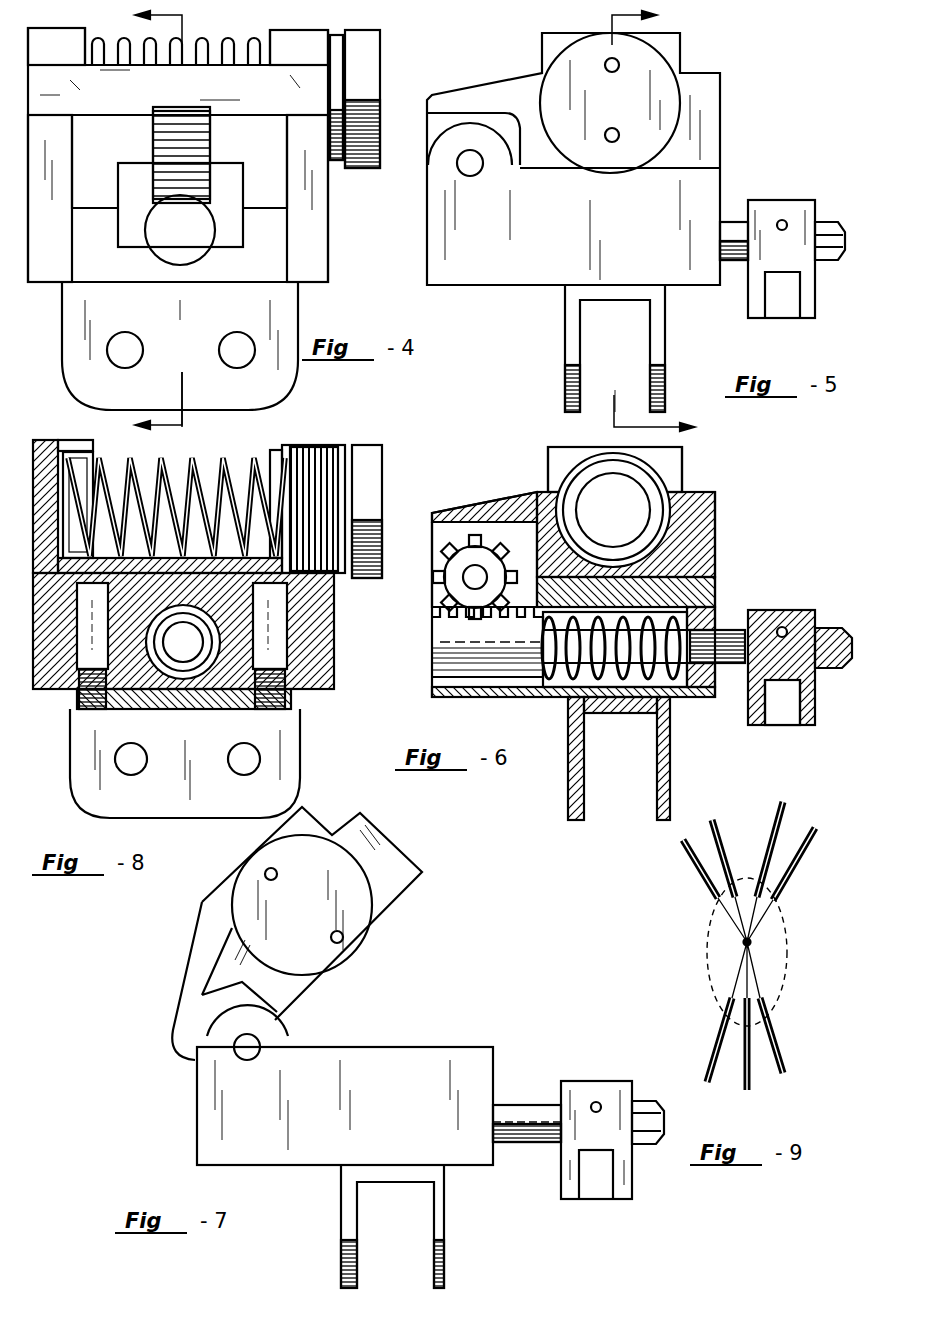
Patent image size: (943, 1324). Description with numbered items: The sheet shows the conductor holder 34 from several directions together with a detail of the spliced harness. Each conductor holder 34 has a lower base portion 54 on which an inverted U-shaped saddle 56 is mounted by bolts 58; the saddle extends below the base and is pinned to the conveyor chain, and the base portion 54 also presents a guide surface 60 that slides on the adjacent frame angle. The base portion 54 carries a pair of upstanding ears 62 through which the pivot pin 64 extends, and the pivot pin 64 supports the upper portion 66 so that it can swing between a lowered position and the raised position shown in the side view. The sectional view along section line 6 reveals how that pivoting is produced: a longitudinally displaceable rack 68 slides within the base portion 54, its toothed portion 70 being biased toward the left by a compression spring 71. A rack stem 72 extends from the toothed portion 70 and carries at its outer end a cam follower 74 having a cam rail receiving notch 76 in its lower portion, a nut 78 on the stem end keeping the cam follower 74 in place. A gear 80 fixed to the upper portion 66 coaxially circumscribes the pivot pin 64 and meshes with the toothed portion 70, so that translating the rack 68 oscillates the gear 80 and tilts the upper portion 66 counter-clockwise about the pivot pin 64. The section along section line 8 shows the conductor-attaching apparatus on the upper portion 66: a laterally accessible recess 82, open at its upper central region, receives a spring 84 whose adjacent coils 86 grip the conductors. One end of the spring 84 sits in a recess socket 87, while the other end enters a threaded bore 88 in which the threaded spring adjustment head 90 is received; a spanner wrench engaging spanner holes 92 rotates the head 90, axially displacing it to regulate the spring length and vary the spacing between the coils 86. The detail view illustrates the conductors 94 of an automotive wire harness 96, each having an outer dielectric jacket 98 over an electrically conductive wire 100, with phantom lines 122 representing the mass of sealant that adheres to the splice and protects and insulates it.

In FIG. 4, the section line 6- 6 is at (146, 221).
In FIG. 8, the section line 6- 6 is at (182, 427).
In FIG. 5, the section line 8- 8 is at (665, 223).
In FIG. 4, the conductor holder 34 is at (228, 221).
In FIG. 5, the conductor holder 34 is at (646, 223).
In FIG. 6, the conductor holder 34 is at (626, 633).
In FIG. 7, the conductor holder 34 is at (351, 1047).
In FIG. 4, the lower base portion 54 is at (322, 268).
In FIG. 5, the lower base portion 54 is at (616, 242).
In FIG. 8, the lower base portion 54 is at (336, 656).
In FIG. 6, the lower base portion 54 is at (718, 590).
In FIG. 7, the lower base portion 54 is at (412, 1119).
In FIG. 4, the inverted U-shaped saddle 56 is at (220, 323).
In FIG. 5, the inverted U-shaped saddle 56 is at (668, 325).
In FIG. 8, the inverted U-shaped saddle 56 is at (72, 766).
In FIG. 6, the inverted U-shaped saddle 56 is at (670, 803).
In FIG. 7, the inverted U-shaped saddle 56 is at (446, 1222).
In FIG. 8, the bolts 58 is at (290, 634).
In FIG. 5, the guide surface 60 is at (492, 286).
In FIG. 7, the guide surface 60 is at (190, 1162).
In FIG. 4, the upstanding ears 62 is at (66, 175).
In FIG. 7, the upstanding ears 62 is at (292, 1031).
In FIG. 5, the pivot pin 64 is at (474, 177).
In FIG. 6, the pivot pin 64 is at (466, 578).
In FIG. 7, the pivot pin 64 is at (236, 1040).
In FIG. 4, the upper portion 66 is at (178, 90).
In FIG. 5, the upper portion 66 is at (710, 92).
In FIG. 8, the upper portion 66 is at (340, 450).
In FIG. 6, the upper portion 66 is at (712, 506).
In FIG. 7, the upper portion 66 is at (425, 876).
In FIG. 4, the rack 68 is at (166, 232).
In FIG. 6, the rack 68 is at (440, 642).
In FIG. 6, the toothed portion 70 is at (480, 652).
In FIG. 8, the compression spring 71 is at (222, 680).
In FIG. 6, the compression spring 71 is at (686, 690).
In FIG. 5, the rack stem 72 is at (732, 222).
In FIG. 8, the rack stem 72 is at (166, 702).
In FIG. 6, the rack stem 72 is at (630, 683).
In FIG. 7, the rack stem 72 is at (518, 1104).
In FIG. 5, the cam follower 74 is at (785, 206).
In FIG. 6, the cam follower 74 is at (800, 612).
In FIG. 7, the cam follower 74 is at (595, 1086).
In FIG. 5, the cam rail receiving notch 76 is at (770, 320).
In FIG. 6, the cam rail receiving notch 76 is at (780, 726).
In FIG. 7, the cam rail receiving notch 76 is at (590, 1196).
In FIG. 5, the nut 78 is at (824, 262).
In FIG. 6, the nut 78 is at (825, 672).
In FIG. 7, the nut 78 is at (646, 1150).
In FIG. 4, the gear 80 is at (196, 149).
In FIG. 6, the gear 80 is at (484, 570).
In FIG. 4, the laterally accessible recess 82 is at (245, 46).
In FIG. 8, the laterally accessible recess 82 is at (272, 452).
In FIG. 6, the laterally accessible recess 82 is at (556, 486).
In FIG. 4, the spring 84 is at (233, 52).
In FIG. 8, the spring 84 is at (163, 465).
In FIG. 6, the spring 84 is at (602, 495).
In FIG. 4, the adjacent coils 86 is at (150, 50).
In FIG. 8, the adjacent coils 86 is at (200, 467).
In FIG. 8, the recess socket 87 is at (80, 440).
In FIG. 8, the threaded bore 88 is at (318, 448).
In FIG. 4, the spring adjustment head 90 is at (372, 48).
In FIG. 5, the spring adjustment head 90 is at (668, 128).
In FIG. 8, the spring adjustment head 90 is at (386, 477).
In FIG. 7, the spring adjustment head 90 is at (307, 937).
In FIG. 5, the spanner holes 92 is at (612, 127).
In FIG. 7, the spanner holes 92 is at (277, 872).
In FIG. 9, the conductors 94 is at (810, 848).
In FIG. 9, the wire harness 96 is at (684, 937).
In FIG. 9, the dielectric jacket 98 is at (683, 862).
In FIG. 9, the electrically conductive wire 100 is at (778, 970).
In FIG. 9, the phantom lines 122 is at (786, 932).